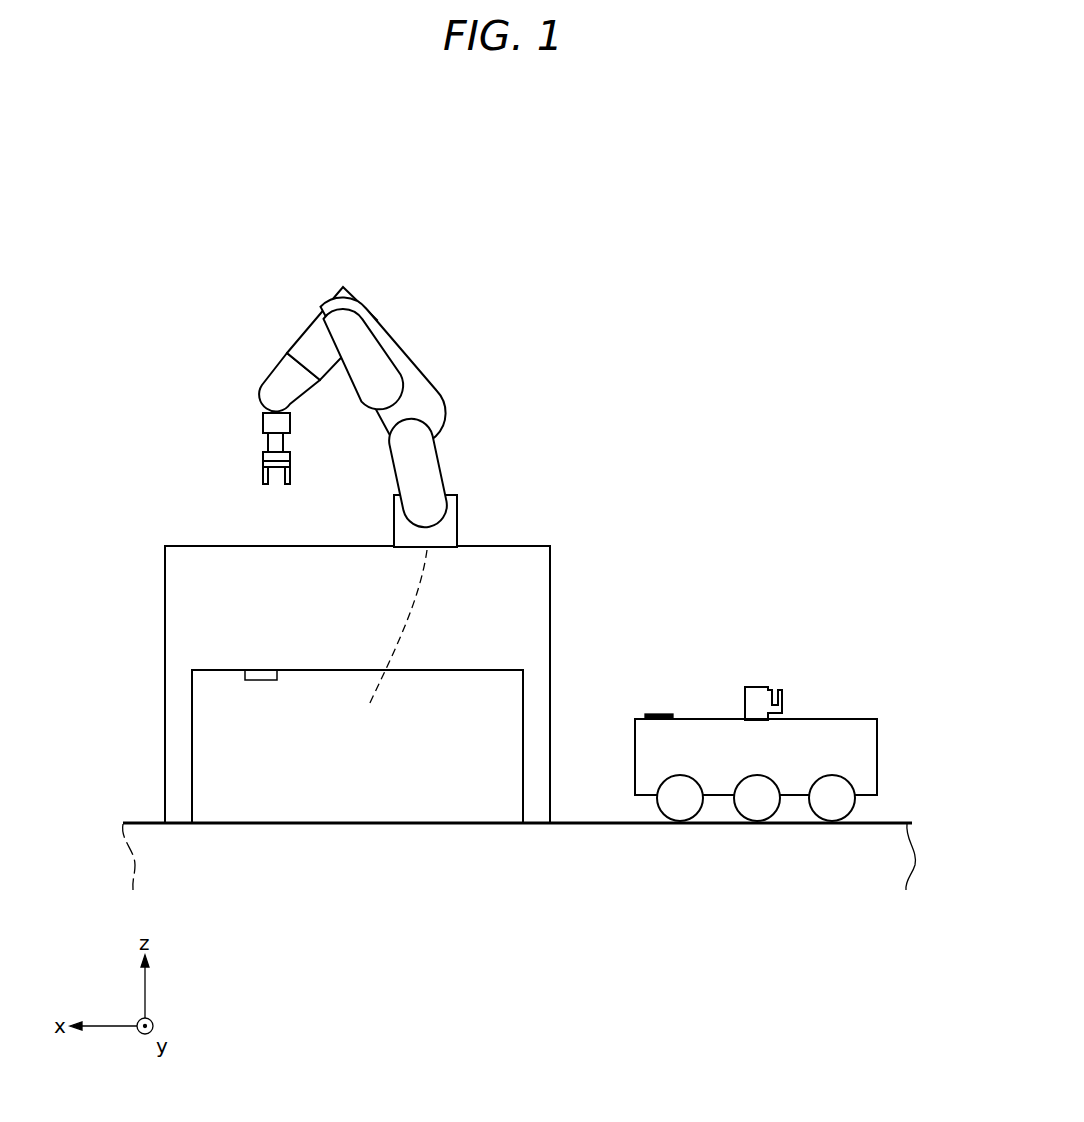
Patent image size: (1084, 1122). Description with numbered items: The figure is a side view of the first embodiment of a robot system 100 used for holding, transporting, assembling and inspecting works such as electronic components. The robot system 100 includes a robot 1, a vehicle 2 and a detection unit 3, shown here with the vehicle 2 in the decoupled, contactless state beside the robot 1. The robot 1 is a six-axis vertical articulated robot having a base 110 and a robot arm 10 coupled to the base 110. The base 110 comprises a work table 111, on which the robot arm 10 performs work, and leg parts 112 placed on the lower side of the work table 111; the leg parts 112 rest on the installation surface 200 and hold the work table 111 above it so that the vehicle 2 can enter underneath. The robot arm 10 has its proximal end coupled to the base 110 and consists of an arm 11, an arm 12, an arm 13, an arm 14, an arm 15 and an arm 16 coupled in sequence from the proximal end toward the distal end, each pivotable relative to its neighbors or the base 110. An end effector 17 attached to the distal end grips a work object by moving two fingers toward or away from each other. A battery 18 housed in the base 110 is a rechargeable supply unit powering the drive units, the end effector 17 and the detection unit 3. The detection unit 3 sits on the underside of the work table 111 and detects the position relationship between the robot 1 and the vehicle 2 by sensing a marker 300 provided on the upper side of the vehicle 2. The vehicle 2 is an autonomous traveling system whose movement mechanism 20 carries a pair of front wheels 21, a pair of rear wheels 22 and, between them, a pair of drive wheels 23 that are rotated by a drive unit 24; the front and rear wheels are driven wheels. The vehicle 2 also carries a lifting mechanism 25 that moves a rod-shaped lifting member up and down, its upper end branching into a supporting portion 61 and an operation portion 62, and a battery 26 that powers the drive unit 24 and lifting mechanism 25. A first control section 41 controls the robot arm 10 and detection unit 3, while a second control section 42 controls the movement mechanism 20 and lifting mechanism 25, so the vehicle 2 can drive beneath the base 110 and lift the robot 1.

The robot system 100 is at (599, 523).
The robot 1 is at (375, 453).
The robot arm 10 is at (375, 378).
The arm 11 is at (421, 470).
The arm 12 is at (400, 411).
The arm 13 is at (372, 360).
The arm 14 is at (318, 347).
The arm 15 is at (284, 384).
The arm 16 is at (279, 422).
The end effector 17 is at (285, 465).
The battery 18 is at (390, 644).
The first control section 41 is at (395, 532).
The second control section 42 is at (840, 735).
The base 110 is at (355, 644).
The work table 111 is at (535, 582).
The leg parts 112 is at (178, 752).
The detection unit 3 is at (258, 671).
The installation surface 200 is at (150, 823).
The vehicle 2 is at (782, 775).
The movement mechanism 20 is at (848, 758).
The front wheels 21 is at (683, 808).
The rear wheels 22 is at (833, 808).
The drive wheels 23 is at (756, 808).
The drive unit 24 is at (767, 800).
The lifting mechanism 25 is at (757, 737).
The battery 26 is at (658, 752).
The marker 300 is at (662, 713).
The supporting portion 61 is at (757, 697).
The operation portion 62 is at (785, 699).